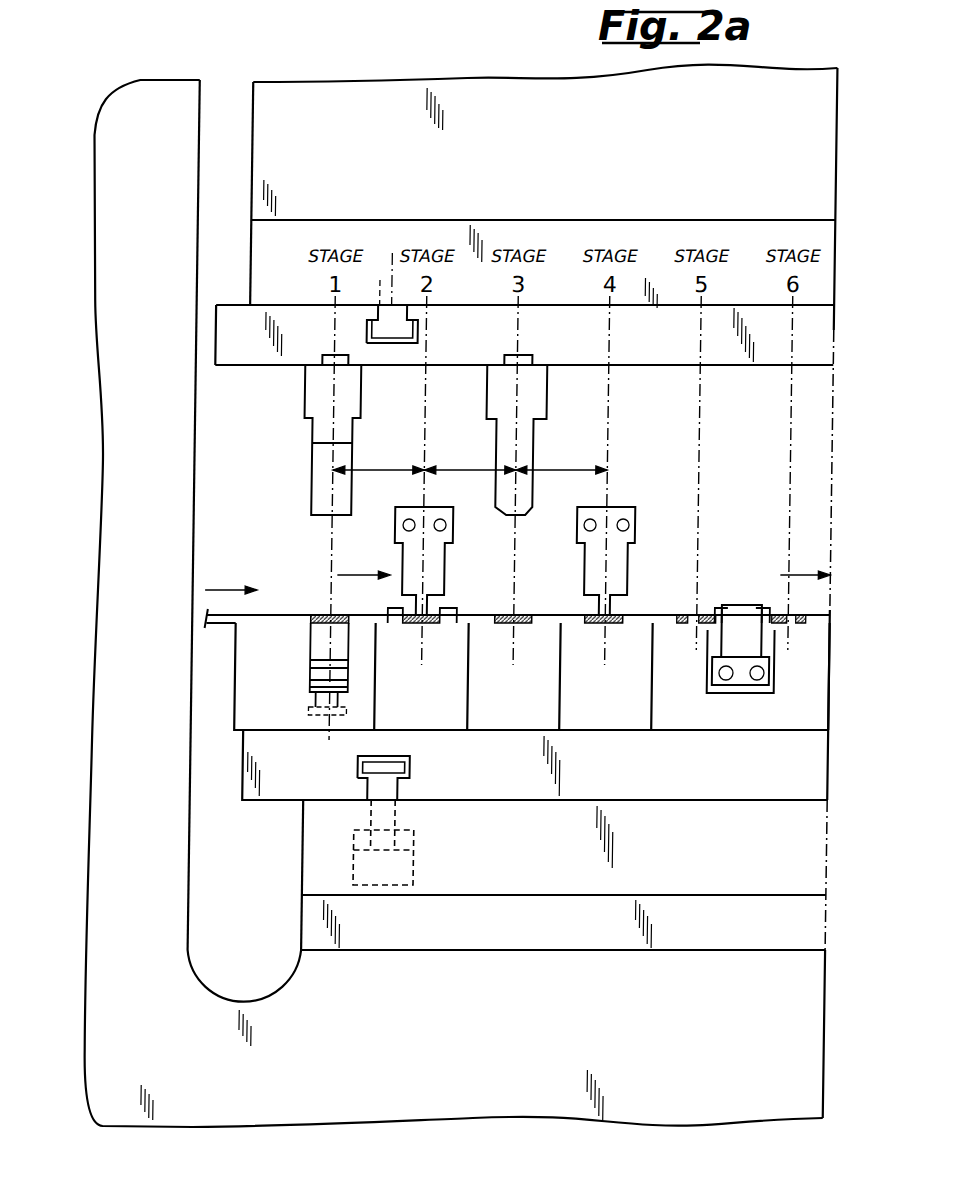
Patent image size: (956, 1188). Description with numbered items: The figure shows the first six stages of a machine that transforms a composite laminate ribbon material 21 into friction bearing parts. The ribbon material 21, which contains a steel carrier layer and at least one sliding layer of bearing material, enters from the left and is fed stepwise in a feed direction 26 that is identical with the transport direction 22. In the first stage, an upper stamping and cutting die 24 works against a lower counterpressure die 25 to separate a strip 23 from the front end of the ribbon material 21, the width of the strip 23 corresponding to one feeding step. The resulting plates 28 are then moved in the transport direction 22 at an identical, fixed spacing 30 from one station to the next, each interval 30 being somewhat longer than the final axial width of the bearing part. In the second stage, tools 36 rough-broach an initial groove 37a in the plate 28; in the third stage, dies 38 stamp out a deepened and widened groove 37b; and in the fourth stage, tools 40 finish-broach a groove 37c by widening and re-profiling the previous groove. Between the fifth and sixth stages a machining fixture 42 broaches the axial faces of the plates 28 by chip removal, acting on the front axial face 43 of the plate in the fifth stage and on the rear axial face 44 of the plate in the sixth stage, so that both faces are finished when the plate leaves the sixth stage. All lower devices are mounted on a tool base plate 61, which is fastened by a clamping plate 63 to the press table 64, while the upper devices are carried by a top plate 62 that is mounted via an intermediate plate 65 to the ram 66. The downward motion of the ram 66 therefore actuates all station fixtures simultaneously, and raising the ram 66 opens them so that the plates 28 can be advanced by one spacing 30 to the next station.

The composite laminate ribbon material 21 is at (262, 615).
The transport direction 22 is at (363, 575).
The strip 23 is at (345, 613).
The upper stamping and cutting die 24 is at (318, 480).
The lower counterpressure die 25 is at (318, 676).
The feed direction 26 is at (222, 590).
The plates 28 is at (797, 630).
The space interval 30 is at (470, 458).
The tools for rough-broaching 36 is at (410, 560).
The groove 37a is at (430, 612).
The deepened and widened groove 37b is at (518, 612).
The finish-broached groove 37c is at (617, 612).
The dies 38 is at (530, 438).
The tools for finish-broaching 40 is at (620, 578).
The machining fixture 42 is at (746, 610).
The axial face 43 is at (726, 606).
The axial face 44 is at (764, 606).
The tool base plate 61 is at (516, 790).
The top plate 62 is at (660, 352).
The clamping plate 63 is at (531, 880).
The press table 64 is at (586, 940).
The intermediate plate 65 is at (568, 220).
The ram 66 is at (348, 100).